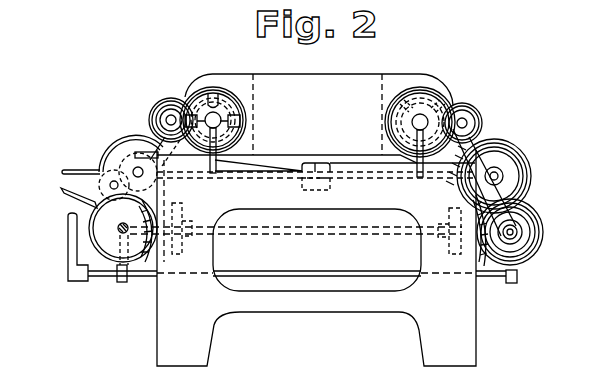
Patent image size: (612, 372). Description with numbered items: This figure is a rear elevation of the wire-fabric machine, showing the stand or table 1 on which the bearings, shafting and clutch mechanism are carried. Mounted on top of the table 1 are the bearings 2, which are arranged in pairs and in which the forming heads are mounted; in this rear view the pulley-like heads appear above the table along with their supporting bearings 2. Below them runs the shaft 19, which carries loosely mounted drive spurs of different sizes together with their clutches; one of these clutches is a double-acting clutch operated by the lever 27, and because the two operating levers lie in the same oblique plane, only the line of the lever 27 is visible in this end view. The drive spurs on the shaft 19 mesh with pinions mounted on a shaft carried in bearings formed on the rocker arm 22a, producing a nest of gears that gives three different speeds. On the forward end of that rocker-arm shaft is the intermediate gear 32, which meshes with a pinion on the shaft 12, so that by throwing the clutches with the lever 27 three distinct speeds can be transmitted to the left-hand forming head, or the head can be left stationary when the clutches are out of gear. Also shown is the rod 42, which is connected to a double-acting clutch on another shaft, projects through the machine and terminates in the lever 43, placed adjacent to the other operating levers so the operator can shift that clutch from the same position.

The stand or table 1 is at (467, 322).
The bearings 2 is at (429, 77).
The shaft 12 is at (172, 101).
The shaft 19 is at (123, 227).
The rocker arm 22a is at (147, 145).
The lever 27 is at (60, 191).
The intermediate gear 32 is at (167, 96).
The rod 42 is at (268, 271).
The lever 43 is at (68, 255).